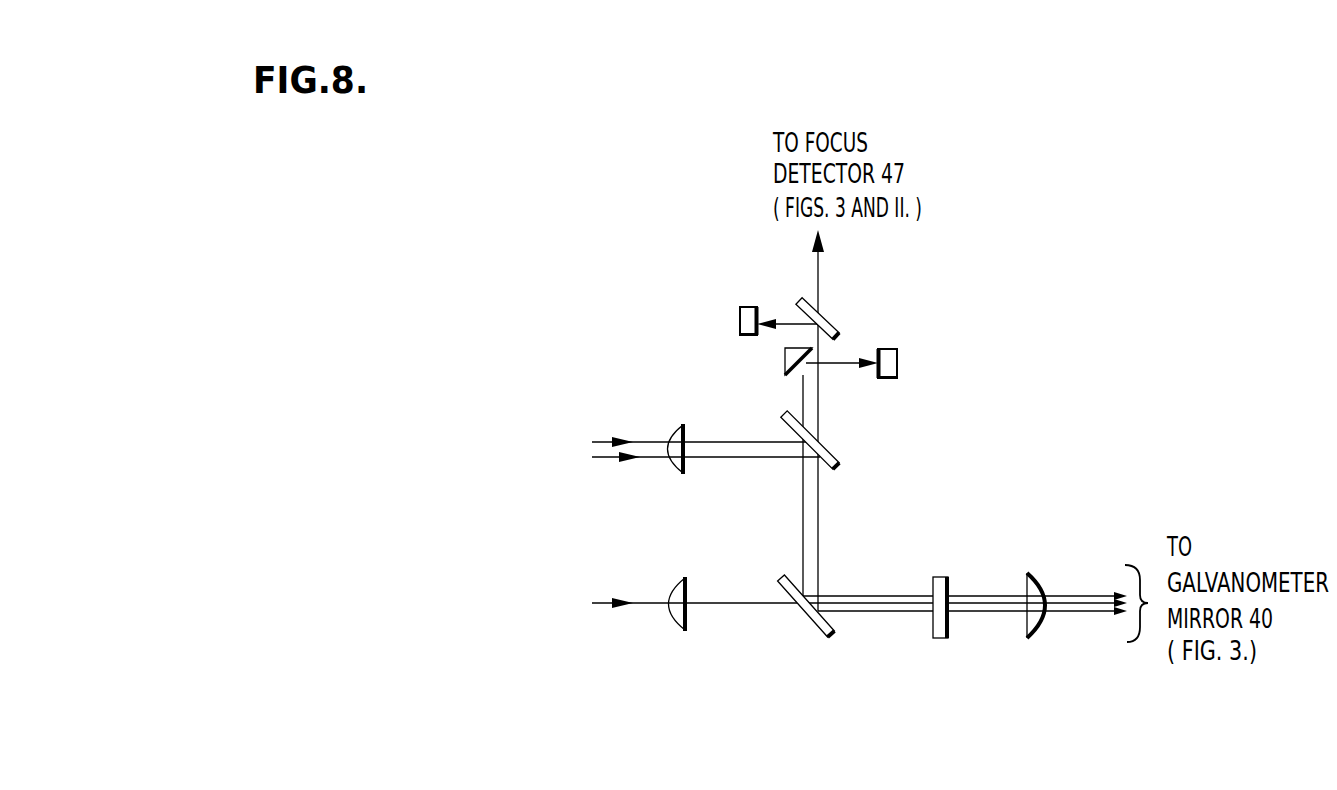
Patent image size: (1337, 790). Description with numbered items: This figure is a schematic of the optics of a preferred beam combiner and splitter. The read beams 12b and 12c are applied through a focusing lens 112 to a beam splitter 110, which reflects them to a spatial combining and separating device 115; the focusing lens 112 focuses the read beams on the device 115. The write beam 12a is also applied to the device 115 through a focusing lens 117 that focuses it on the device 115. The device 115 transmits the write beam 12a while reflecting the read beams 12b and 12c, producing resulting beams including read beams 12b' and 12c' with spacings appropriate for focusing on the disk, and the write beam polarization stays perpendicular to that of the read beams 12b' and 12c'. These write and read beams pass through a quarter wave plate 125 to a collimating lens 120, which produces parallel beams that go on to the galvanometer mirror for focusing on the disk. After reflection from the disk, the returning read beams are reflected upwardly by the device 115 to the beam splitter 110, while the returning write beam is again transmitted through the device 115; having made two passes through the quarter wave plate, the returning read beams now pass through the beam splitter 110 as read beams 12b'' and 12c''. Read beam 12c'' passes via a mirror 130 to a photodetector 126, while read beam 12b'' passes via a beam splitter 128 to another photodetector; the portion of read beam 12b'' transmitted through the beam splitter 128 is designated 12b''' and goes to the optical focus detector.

The beam splitter 110 is at (783, 417).
The focusing lens 112 is at (672, 426).
The spatial combining and separating device 115 is at (775, 592).
The focusing lens 117 is at (677, 578).
The collimating lens 120 is at (1024, 575).
The quarter wave plate 125 is at (933, 580).
The photodetector 126 is at (740, 318).
The beam splitter 128 is at (840, 322).
The mirror 130 is at (785, 358).
The write beam 12a is at (598, 600).
The read beam 12b is at (625, 478).
The read beam 12c is at (618, 420).
The read beam 12b' is at (972, 659).
The read beam 12c' is at (965, 566).
The reflected read beam 12b'' is at (850, 470).
The reflected read beam 12c'' is at (771, 485).
The read beam portion 12b''' is at (858, 280).